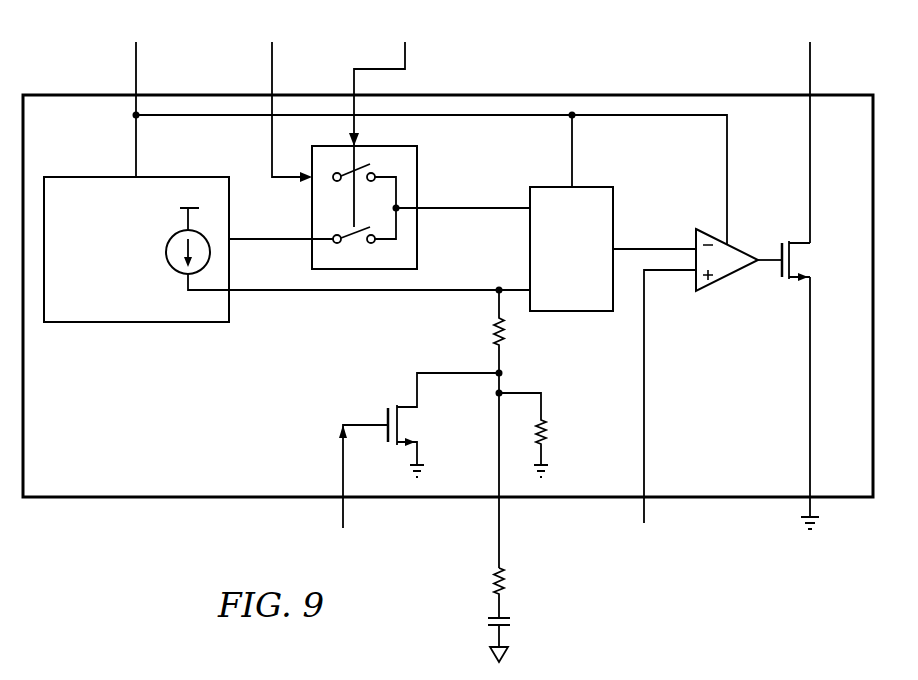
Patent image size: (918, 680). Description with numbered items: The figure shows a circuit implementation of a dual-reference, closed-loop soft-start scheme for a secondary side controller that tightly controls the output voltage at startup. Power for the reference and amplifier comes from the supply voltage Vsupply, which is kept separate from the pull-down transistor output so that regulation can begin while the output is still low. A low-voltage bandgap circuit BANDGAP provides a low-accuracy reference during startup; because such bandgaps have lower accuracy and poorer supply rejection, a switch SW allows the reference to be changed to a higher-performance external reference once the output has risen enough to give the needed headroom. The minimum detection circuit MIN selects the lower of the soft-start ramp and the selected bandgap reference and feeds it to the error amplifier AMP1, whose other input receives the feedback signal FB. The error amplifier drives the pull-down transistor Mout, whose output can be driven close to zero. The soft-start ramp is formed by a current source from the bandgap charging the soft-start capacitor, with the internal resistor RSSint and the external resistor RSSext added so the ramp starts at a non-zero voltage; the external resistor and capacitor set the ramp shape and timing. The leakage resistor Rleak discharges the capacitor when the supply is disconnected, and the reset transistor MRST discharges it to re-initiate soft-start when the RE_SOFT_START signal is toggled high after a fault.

The supply voltage Vsupply is at (415, 127).
The reference selection switch SW is at (421, 207).
The low-voltage bandgap circuit BANDGAP is at (287, 249).
The minimum detection circuit MIN is at (613, 249).
The error amplifier AMP1 is at (739, 275).
The feedback input FB is at (658, 411).
The pull down transistor Mout is at (817, 283).
The internal soft-start resistor RSSint is at (468, 429).
The reset transistor MRST is at (382, 462).
The internal leakage resistor Rleak is at (545, 435).
The external soft-start resistor RSSext is at (525, 591).